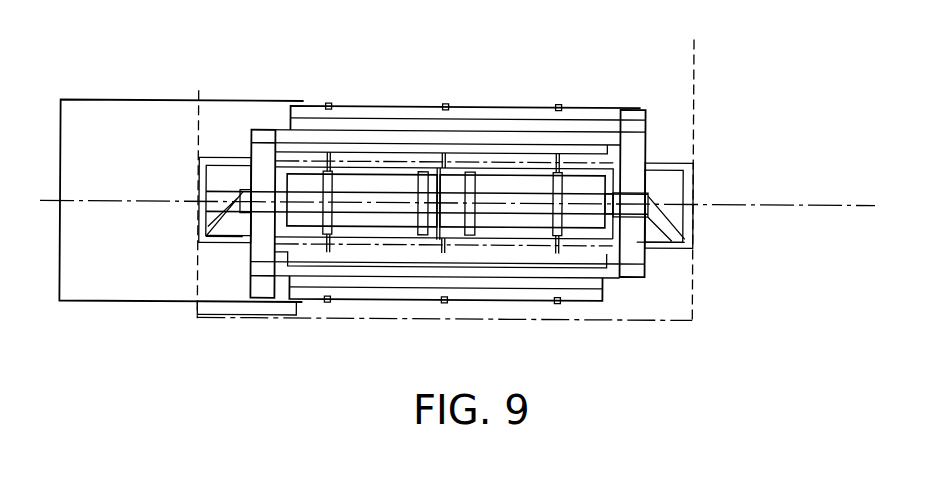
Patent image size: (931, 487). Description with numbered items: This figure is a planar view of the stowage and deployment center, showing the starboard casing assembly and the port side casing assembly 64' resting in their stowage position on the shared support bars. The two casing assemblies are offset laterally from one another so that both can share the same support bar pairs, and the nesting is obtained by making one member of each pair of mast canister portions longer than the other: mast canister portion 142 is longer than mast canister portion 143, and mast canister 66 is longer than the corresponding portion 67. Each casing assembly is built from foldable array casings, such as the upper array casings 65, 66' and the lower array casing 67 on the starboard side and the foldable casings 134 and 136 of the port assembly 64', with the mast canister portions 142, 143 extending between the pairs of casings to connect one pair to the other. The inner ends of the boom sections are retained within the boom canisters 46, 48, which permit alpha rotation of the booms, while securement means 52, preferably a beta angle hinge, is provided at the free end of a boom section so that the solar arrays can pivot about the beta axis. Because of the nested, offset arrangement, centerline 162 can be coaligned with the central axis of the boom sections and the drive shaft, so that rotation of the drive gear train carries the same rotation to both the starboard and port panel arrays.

The boom canister 46 is at (578, 193).
The boom canister 48 is at (348, 193).
The securement means 52 is at (243, 209).
The port side casing assembly 64' is at (445, 175).
The upper array casing 65 is at (287, 144).
The mast canister 66 is at (208, 240).
The upper array casing 66' is at (207, 184).
The lower array casing 67 is at (382, 293).
The foldable casing 134 is at (387, 103).
The foldable casing 136 is at (613, 273).
The mast canister portion 142 is at (633, 156).
The mast canister portion 143 is at (690, 228).
The centerline 162 is at (748, 205).